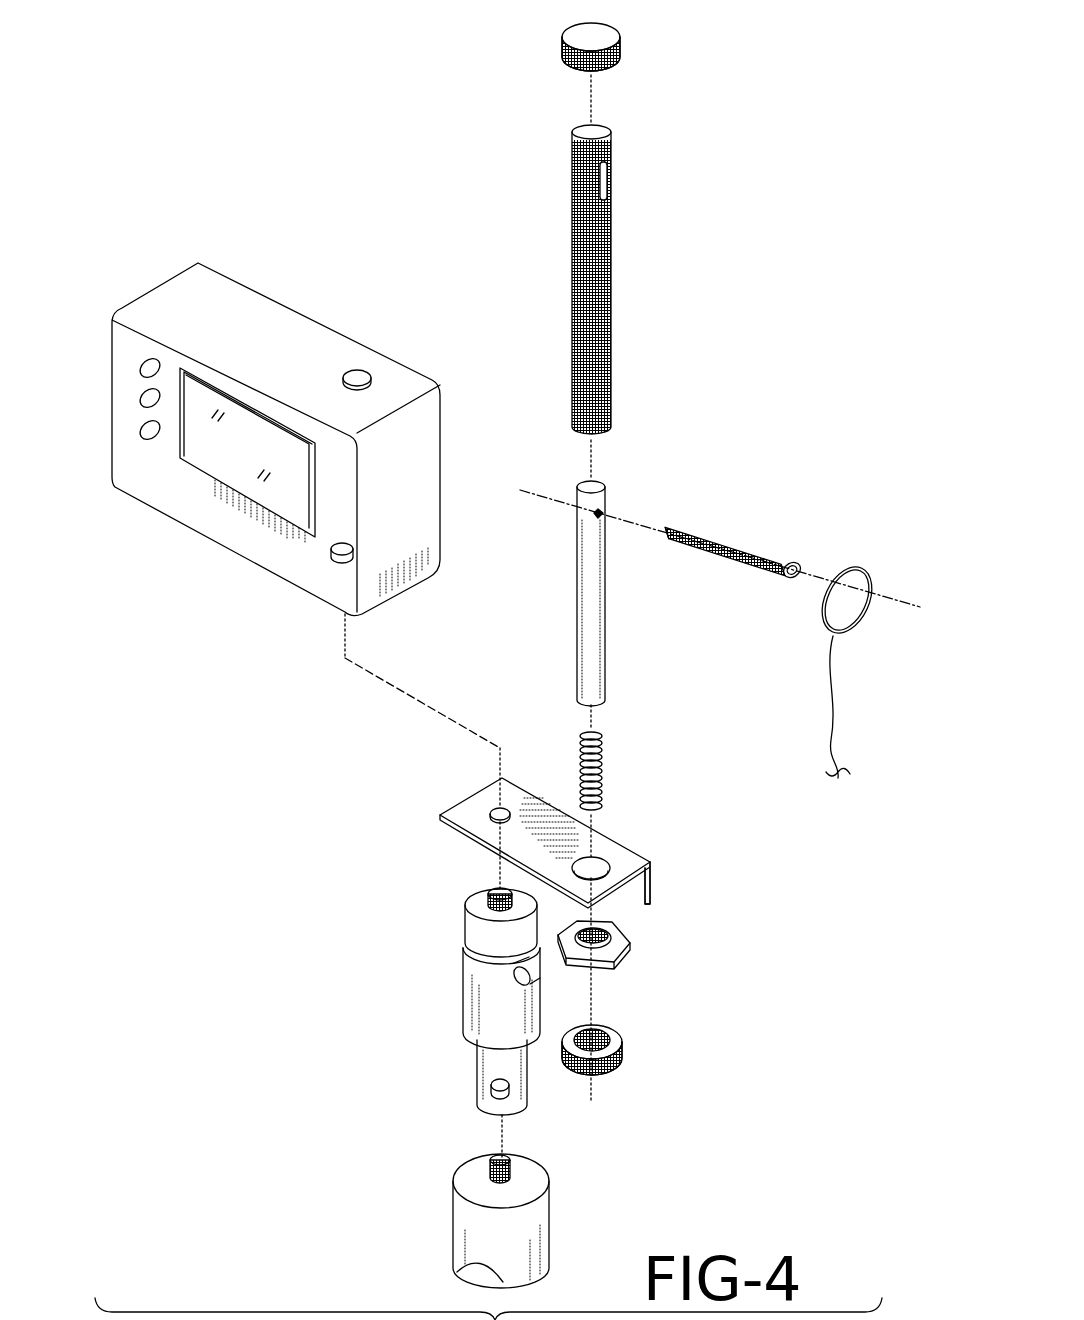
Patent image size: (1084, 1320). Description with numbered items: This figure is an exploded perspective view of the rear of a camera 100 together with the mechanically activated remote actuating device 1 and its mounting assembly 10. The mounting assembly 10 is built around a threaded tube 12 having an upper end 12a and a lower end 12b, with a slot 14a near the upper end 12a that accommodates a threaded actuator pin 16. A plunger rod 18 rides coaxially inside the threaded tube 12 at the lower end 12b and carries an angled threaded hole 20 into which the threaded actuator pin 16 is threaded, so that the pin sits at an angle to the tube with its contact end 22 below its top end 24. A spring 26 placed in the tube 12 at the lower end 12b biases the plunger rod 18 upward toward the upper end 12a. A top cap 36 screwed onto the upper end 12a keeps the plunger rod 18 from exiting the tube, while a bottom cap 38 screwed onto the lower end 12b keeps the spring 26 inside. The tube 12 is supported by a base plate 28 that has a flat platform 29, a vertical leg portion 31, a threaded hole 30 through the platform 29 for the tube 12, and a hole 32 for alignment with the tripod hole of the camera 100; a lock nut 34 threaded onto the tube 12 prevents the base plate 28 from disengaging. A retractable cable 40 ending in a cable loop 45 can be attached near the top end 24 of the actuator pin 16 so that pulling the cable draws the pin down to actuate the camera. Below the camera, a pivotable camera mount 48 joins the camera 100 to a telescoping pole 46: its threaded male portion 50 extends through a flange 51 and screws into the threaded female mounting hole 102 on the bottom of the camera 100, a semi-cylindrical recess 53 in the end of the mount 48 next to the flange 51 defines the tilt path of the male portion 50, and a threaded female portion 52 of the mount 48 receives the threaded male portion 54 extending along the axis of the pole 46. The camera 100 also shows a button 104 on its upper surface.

The mechanically activated remote actuating device 1 is at (148, 145).
The mounting assembly 10 is at (712, 406).
The camera 100 is at (275, 305).
The threaded female mounting hole 102 is at (336, 560).
The button 104 is at (358, 374).
The top cap 36 is at (603, 36).
The threaded tube 12 is at (603, 279).
The upper end 12a is at (604, 148).
The lower end 12b is at (573, 421).
The slot 14a is at (609, 182).
The plunger rod 18 is at (578, 590).
The threaded hole 20 is at (602, 515).
The threaded actuator pin 16 is at (752, 540).
The contact end 22 is at (667, 531).
The top end 24 is at (795, 564).
The cable loop 45 is at (862, 626).
The retractable cable 40 is at (832, 725).
The spring 26 is at (601, 756).
The base plate 28 is at (660, 876).
The flat platform 29 is at (527, 820).
The threaded hole 30 is at (601, 861).
The vertical leg portion 31 is at (636, 892).
The hole 32 is at (497, 811).
The lock nut 34 is at (618, 950).
The threaded male portion 50 is at (496, 895).
The flange 51 is at (453, 907).
The pivotable camera mount 48 is at (465, 998).
The semi-cylindrical recess 53 is at (526, 969).
The threaded female portion 52 is at (480, 1105).
The bottom cap 38 is at (602, 1062).
The threaded male portion 54 is at (508, 1173).
The telescoping pole 46 is at (486, 1211).